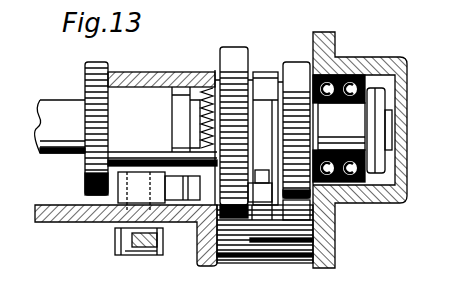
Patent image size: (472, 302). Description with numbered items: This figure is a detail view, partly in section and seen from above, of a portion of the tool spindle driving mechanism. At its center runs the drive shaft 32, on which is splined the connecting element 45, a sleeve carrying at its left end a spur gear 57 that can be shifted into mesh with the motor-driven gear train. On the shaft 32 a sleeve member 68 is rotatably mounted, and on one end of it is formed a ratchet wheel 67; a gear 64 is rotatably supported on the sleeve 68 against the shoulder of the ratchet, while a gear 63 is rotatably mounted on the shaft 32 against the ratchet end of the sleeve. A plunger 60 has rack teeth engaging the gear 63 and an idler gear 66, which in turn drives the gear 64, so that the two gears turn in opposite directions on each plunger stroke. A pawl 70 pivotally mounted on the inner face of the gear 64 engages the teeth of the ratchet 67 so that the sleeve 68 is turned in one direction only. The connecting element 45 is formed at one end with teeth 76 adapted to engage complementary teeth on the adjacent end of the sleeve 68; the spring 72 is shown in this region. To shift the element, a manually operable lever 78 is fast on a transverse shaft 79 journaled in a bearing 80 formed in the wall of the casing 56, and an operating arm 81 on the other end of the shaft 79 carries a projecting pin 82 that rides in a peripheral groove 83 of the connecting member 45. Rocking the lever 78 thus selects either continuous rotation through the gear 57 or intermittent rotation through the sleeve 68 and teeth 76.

The drive shaft 32 is at (52, 99).
The spur gear 57 is at (97, 89).
The connecting element 45 is at (166, 64).
The peripheral groove 83 is at (172, 104).
The projecting pin 82 is at (172, 146).
The spring 72 is at (204, 118).
The teeth 76 is at (203, 135).
The bearing 80 is at (141, 191).
The operating arm 81 is at (188, 196).
The casing 56 is at (58, 222).
The manually operable lever 78 is at (121, 245).
The transverse shaft 79 is at (130, 256).
The gear 64 is at (232, 78).
The sleeve member 68 is at (220, 70).
The ratchet wheel 67 is at (263, 76).
The pawl 70 is at (258, 185).
The gear 63 is at (291, 100).
The idler gear 66 is at (247, 263).
The plunger 60 is at (272, 220).